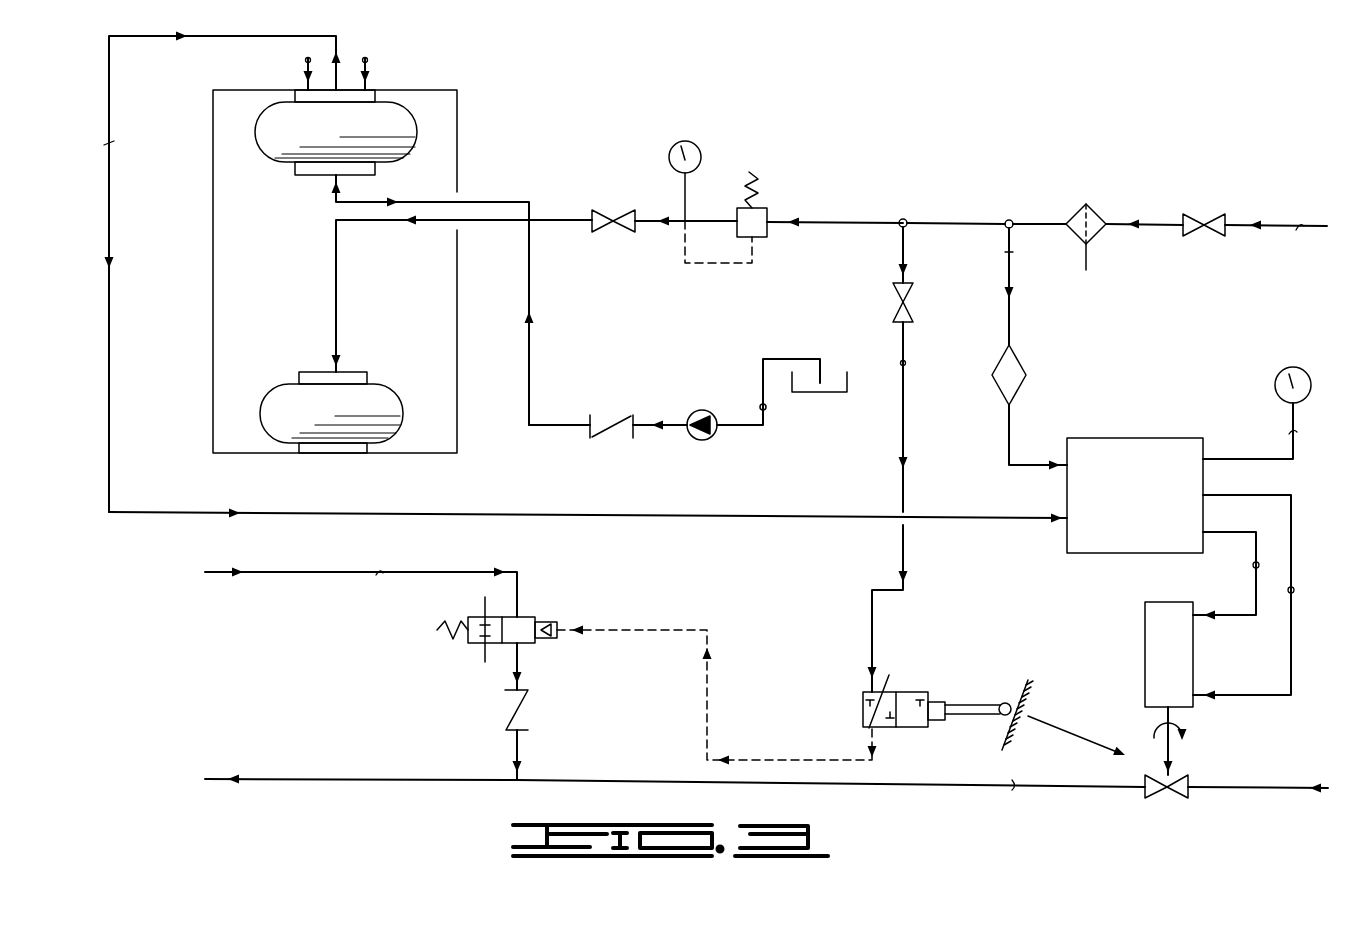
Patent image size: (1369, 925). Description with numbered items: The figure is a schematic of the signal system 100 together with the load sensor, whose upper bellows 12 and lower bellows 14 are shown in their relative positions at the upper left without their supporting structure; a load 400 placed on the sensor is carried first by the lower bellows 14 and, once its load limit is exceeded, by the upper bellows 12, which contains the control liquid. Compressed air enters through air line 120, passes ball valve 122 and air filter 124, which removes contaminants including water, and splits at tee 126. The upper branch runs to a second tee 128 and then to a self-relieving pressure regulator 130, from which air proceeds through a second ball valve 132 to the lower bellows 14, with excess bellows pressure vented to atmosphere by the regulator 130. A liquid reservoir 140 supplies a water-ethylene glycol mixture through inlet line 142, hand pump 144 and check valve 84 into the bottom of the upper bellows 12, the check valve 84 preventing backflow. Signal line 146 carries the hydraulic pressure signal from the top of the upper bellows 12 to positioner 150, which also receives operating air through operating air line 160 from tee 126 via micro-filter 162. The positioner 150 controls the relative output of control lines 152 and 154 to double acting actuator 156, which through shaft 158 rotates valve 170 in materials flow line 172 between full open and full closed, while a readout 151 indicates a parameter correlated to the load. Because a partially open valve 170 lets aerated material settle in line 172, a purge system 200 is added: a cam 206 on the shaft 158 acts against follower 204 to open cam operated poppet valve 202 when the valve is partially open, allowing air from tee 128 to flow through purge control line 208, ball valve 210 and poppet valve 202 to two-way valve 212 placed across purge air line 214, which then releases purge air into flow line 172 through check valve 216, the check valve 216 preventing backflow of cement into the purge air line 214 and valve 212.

The upper bellows 12 is at (397, 119).
The lower bellows 14 is at (378, 405).
The check valve 84 is at (610, 415).
The signal system 100 is at (794, 110).
The air line 120 is at (1300, 222).
The ball valve 122 is at (1216, 214).
The air filter 124 is at (1115, 194).
The tee 126 is at (1010, 218).
The second tee 128 is at (906, 218).
The self-relieving pressure regulator 130 is at (757, 218).
The second ball valve 132 is at (629, 208).
The liquid reservoir 140 is at (838, 370).
The inlet line 142 is at (767, 408).
The hand pump 144 is at (711, 418).
The signal line 146 is at (111, 143).
The positioner 150 is at (1140, 440).
The readout 151 is at (1296, 434).
The control line 152 is at (1294, 592).
The control line 154 is at (1260, 565).
The double acting actuator 156 is at (1157, 637).
The shaft 158 is at (1170, 756).
The operating air line 160 is at (1004, 252).
The micro-filter 162 is at (1012, 367).
The valve 170 is at (1190, 785).
The materials flow line 172 is at (766, 793).
The purge system 200 is at (812, 705).
The cam operated poppet valve 202 is at (920, 692).
The follower 204 is at (978, 704).
The cam 206 is at (1003, 741).
The purge control line 208 is at (907, 367).
The ball valve 210 is at (907, 316).
The two-way valve 212 is at (531, 624).
The purge air line 214 is at (381, 572).
The check valve 216 is at (529, 708).
The load 400 is at (305, 62).